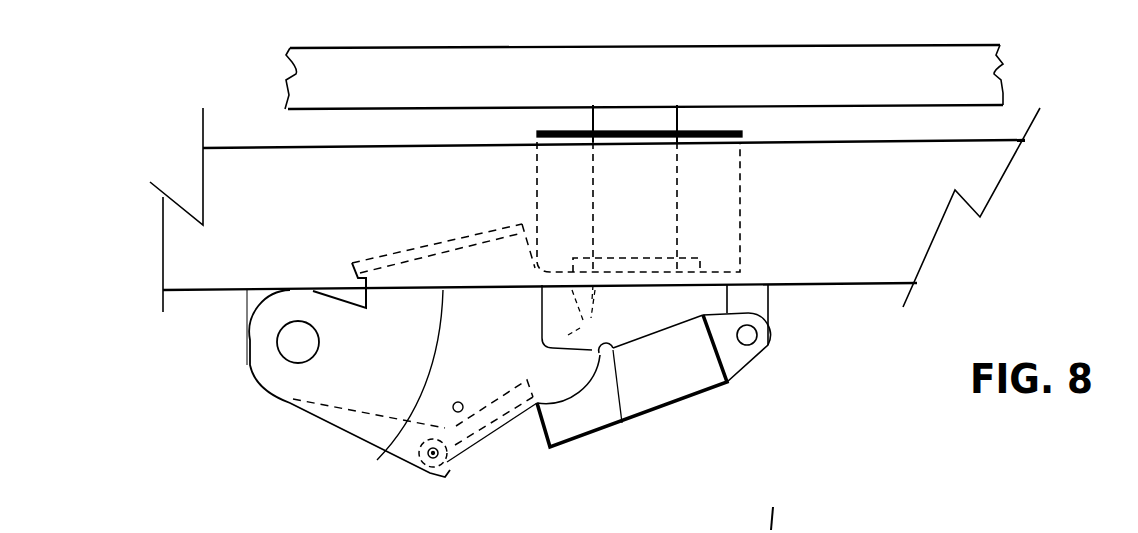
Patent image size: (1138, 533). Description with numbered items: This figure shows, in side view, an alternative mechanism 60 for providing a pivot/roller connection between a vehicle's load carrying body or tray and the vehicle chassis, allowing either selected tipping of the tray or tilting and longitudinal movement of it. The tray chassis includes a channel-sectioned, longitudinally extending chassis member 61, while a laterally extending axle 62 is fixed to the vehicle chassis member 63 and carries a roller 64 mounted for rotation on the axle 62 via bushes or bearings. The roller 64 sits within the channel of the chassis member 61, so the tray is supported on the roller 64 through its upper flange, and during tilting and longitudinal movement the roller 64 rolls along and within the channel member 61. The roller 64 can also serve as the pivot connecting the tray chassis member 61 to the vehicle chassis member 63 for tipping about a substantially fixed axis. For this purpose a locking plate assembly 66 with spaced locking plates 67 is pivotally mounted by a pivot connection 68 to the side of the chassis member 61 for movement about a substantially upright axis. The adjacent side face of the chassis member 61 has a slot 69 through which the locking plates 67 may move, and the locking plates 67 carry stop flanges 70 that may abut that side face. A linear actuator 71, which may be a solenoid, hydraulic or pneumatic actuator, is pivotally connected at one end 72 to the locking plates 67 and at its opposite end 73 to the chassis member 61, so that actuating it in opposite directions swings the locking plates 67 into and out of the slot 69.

The alternative mechanism 60 is at (370, 366).
The chassis member 61 is at (975, 138).
The axle 62 is at (590, 122).
The vehicle chassis member 63 is at (296, 73).
The roller 64 is at (742, 240).
The locking plate assembly 66 is at (607, 410).
The locking plate 67 is at (348, 426).
The pivot connection 68 is at (270, 363).
The slot 69 is at (403, 418).
The stop flange 70 is at (596, 347).
The linear actuator 71 is at (680, 385).
The actuator end 72 is at (443, 470).
The actuator end connection 73 is at (768, 353).